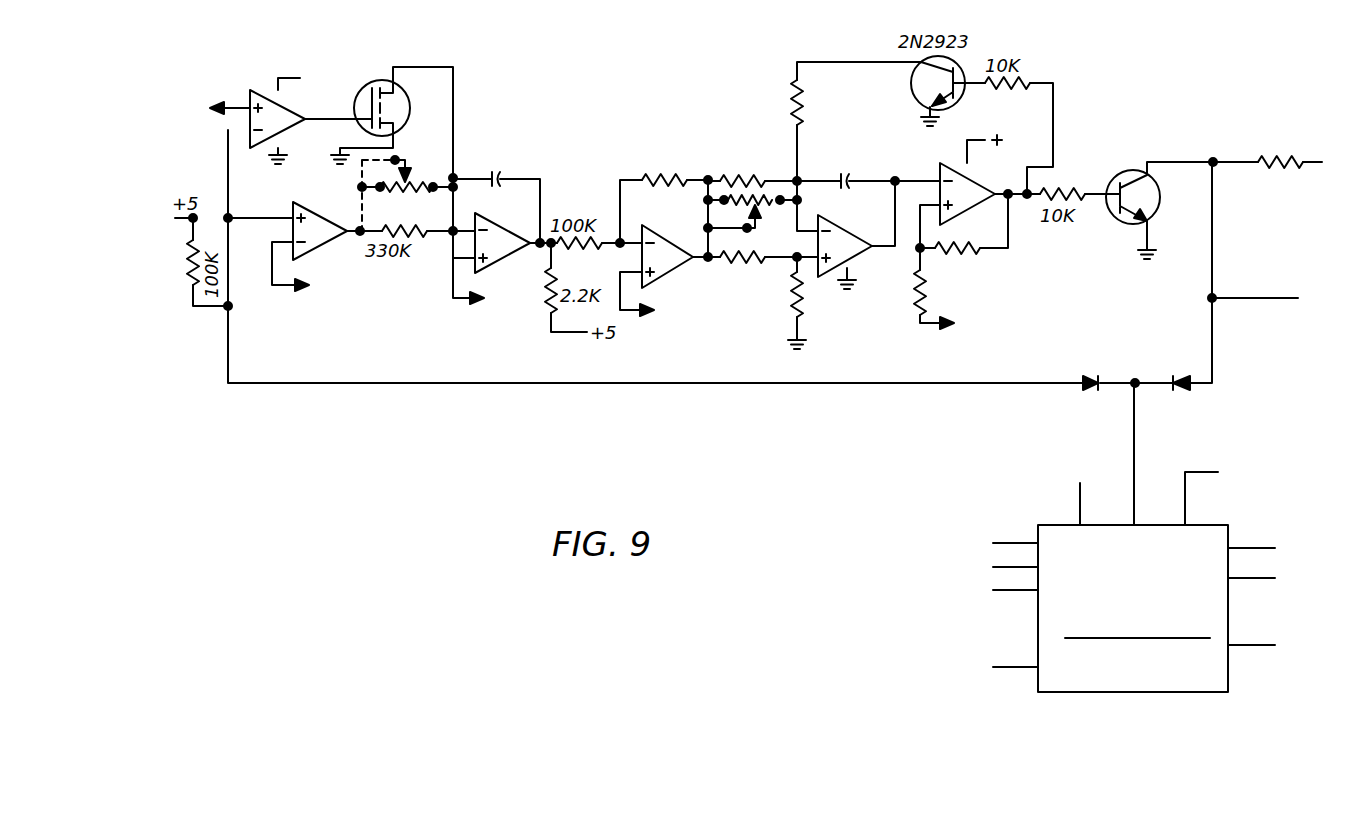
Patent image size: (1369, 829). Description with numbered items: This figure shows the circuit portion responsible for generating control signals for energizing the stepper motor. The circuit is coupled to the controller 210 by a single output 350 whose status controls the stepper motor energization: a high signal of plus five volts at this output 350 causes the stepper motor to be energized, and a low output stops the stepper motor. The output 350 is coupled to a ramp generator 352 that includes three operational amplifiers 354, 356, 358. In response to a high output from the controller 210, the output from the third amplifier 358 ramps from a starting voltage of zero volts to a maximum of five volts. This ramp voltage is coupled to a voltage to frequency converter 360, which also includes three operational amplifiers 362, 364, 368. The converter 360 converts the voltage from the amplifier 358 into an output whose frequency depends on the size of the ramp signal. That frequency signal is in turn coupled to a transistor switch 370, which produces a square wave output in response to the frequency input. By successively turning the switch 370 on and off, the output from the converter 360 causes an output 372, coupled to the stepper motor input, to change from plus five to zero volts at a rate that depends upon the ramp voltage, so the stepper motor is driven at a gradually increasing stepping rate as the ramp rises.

The operational amplifier 354 is at (270, 108).
The ramp generator 352 is at (457, 115).
The operational amplifier 356 is at (307, 233).
The operational amplifier 358 is at (476, 241).
The voltage to frequency converter 360 is at (750, 115).
The operational amplifier 362 is at (690, 260).
The operational amplifier 364 is at (840, 258).
The operational amplifier 368 is at (967, 193).
The transistor switch 370 is at (1104, 190).
The output 372 is at (1212, 240).
The output 350 is at (1135, 458).
The controller 210 is at (1112, 675).